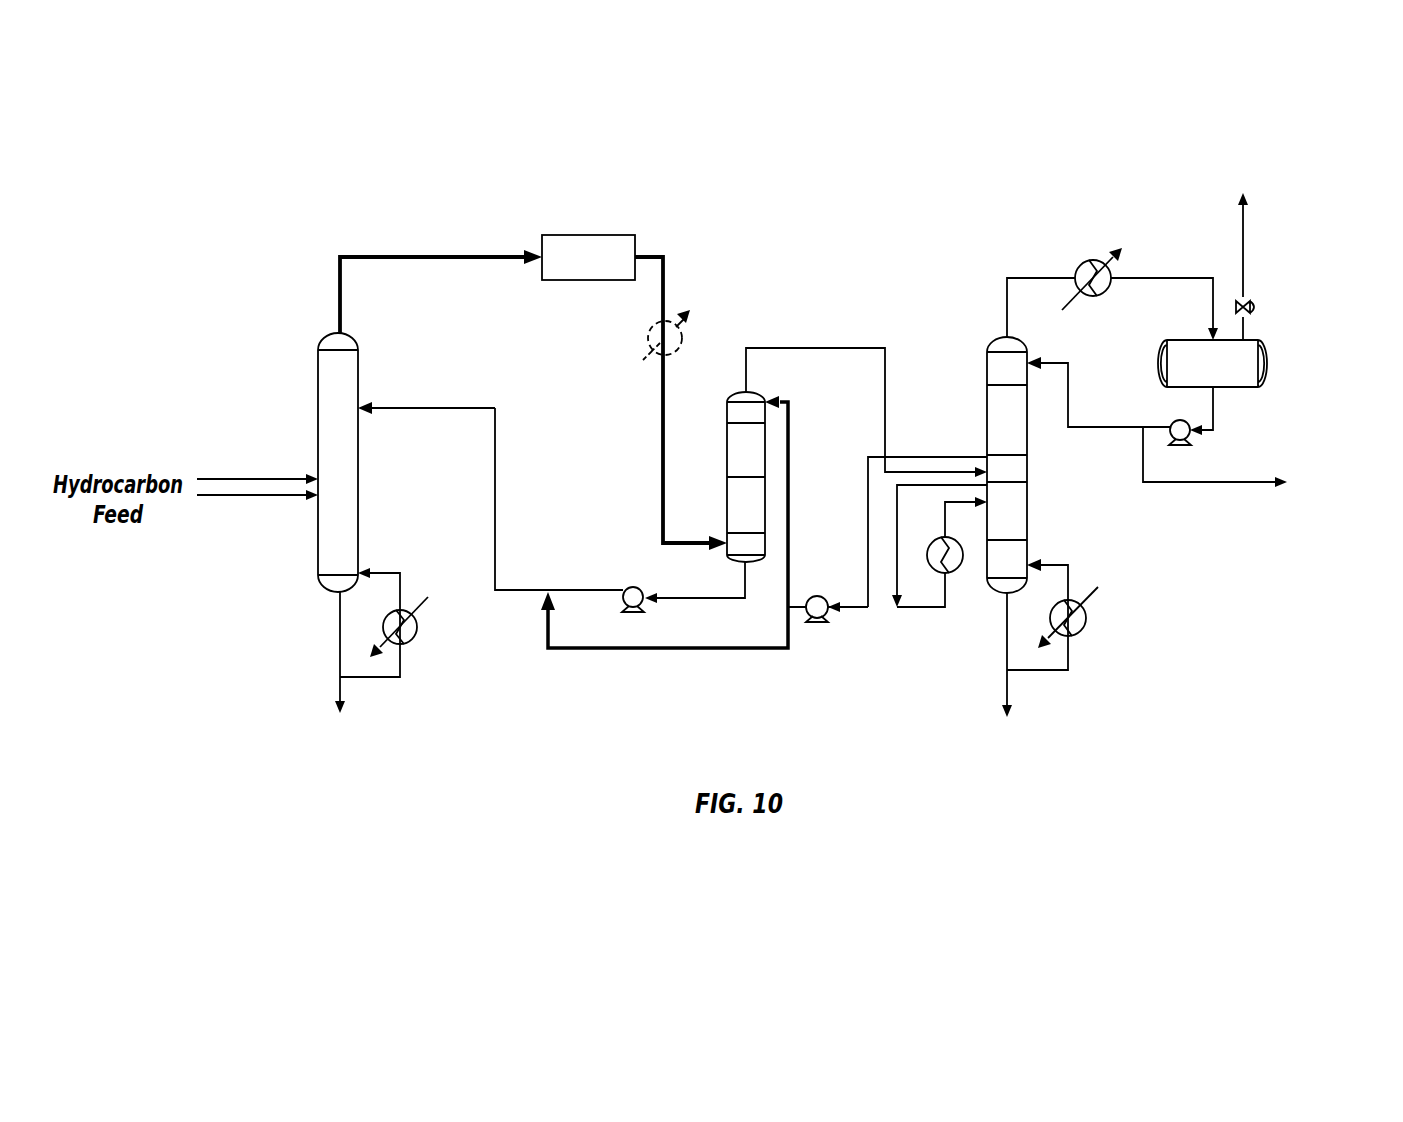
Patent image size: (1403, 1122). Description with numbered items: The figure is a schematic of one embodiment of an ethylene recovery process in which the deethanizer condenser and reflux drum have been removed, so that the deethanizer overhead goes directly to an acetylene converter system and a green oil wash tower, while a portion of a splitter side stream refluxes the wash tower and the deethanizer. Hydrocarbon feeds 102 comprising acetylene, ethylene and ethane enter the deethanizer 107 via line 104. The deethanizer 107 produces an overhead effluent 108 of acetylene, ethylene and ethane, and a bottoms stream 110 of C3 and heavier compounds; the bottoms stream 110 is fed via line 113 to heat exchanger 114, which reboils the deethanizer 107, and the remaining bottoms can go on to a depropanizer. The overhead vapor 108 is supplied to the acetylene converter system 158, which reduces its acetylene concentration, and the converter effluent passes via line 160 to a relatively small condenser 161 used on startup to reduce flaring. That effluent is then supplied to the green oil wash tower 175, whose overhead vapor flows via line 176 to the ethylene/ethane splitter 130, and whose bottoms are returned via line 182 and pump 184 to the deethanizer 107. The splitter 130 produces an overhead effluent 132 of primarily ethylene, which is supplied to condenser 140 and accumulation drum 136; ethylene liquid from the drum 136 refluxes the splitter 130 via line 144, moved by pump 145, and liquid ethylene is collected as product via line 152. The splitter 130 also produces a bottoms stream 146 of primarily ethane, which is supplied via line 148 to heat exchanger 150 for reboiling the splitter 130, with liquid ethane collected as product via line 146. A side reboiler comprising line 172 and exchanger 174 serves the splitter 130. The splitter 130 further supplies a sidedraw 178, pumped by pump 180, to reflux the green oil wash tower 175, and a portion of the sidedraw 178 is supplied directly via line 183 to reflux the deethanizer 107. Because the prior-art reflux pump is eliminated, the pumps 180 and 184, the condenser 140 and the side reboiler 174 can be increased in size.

The hydrocarbon feeds 102 is at (278, 477).
The line 104 is at (278, 498).
The deethanizer 107 is at (318, 398).
The overhead effluent 108 is at (338, 295).
The bottoms stream 110 is at (338, 638).
The line 113 is at (380, 678).
The heat exchanger 114 is at (410, 643).
The ethylene/ethane splitter 130 is at (1028, 445).
The overhead effluent 132 is at (1005, 292).
The accumulation drum 136 is at (1270, 362).
The condenser 140 is at (1093, 260).
The line 144 is at (1215, 407).
The reflux pump 145 is at (1185, 443).
The bottoms stream 146 is at (1003, 633).
The line 148 is at (1033, 670).
The heat exchanger 150 is at (1087, 628).
The line 152 is at (1243, 485).
The acetylene converter system 158 is at (615, 235).
The line 160 is at (660, 293).
The condenser 161 is at (647, 343).
The line 172 is at (895, 508).
The exchanger 174 is at (947, 578).
The green oil wash tower 175 is at (725, 447).
The line 176 is at (828, 347).
The sidedraw 178 is at (960, 455).
The pump 180 is at (818, 620).
The line 182 is at (715, 600).
The line 183 is at (673, 650).
The pump 184 is at (637, 610).